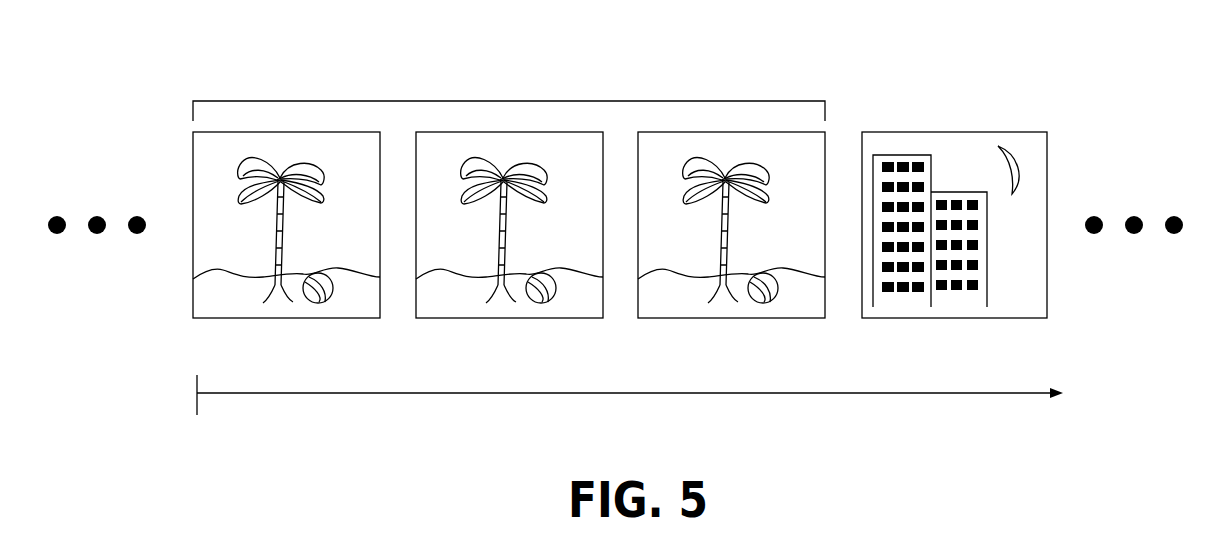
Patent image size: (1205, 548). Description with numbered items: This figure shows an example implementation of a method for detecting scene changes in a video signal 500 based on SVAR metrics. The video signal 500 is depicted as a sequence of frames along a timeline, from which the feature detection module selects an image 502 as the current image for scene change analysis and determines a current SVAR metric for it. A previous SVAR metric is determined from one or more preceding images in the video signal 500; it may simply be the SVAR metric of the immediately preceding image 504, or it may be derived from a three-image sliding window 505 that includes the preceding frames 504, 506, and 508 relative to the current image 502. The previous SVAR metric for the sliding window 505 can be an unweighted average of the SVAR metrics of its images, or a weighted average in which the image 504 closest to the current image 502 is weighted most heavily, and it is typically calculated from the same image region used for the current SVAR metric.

The video signal 500 is at (958, 67).
The image 502 is at (893, 318).
The immediately preceding image 504 is at (667, 318).
The three-image sliding window 505 is at (682, 100).
The preceding frame 506 is at (447, 318).
The preceding frame 508 is at (225, 318).